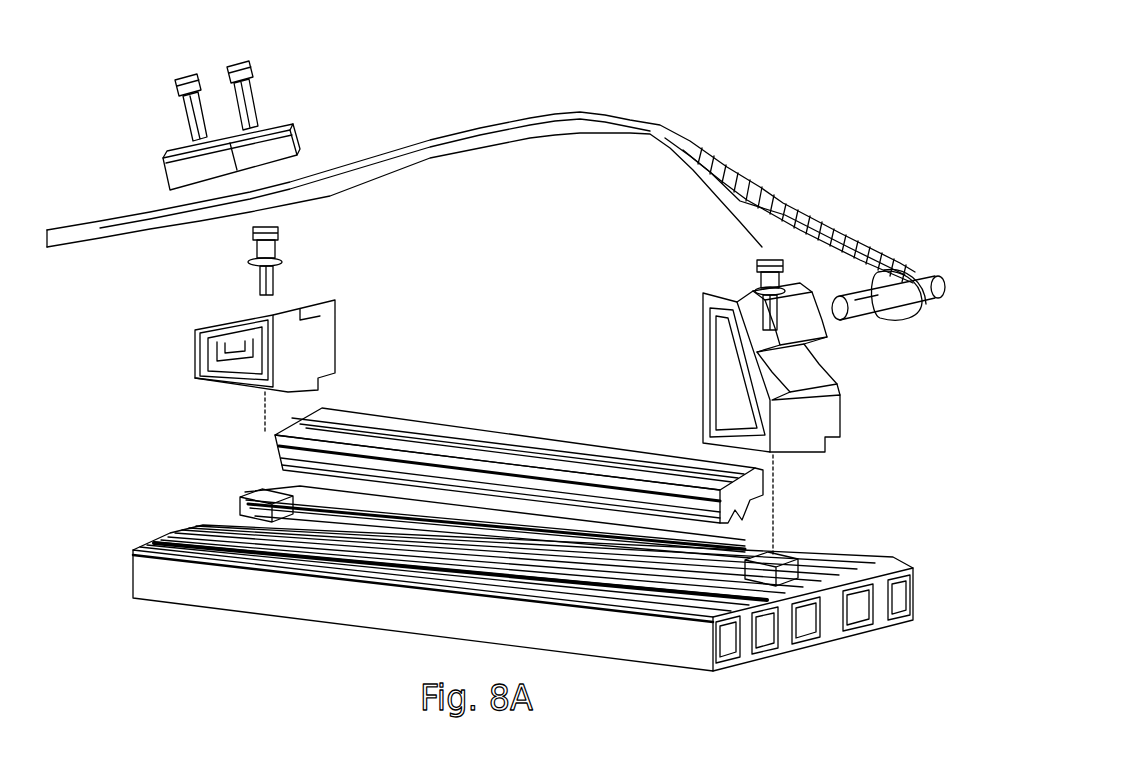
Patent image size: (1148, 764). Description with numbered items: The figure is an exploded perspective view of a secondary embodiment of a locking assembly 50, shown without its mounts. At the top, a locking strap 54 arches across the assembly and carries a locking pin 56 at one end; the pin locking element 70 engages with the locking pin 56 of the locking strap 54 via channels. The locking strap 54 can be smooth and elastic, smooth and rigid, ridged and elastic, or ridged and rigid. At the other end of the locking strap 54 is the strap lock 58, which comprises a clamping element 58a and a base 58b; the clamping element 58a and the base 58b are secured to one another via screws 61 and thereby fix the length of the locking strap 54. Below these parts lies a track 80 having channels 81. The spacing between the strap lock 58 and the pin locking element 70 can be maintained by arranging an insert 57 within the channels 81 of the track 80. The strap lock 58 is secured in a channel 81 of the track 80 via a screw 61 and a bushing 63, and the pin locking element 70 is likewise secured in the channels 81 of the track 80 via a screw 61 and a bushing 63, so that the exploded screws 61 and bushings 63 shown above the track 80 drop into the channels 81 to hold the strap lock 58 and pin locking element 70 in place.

The locking assembly 50 is at (722, 52).
The locking strap 54 is at (598, 108).
The locking pin 56 is at (928, 270).
The insert 57 is at (493, 438).
The strap lock 58 is at (318, 118).
The clamping element 58a is at (275, 128).
The base 58b is at (343, 336).
The screws 61 is at (236, 58).
The bushing 63 is at (236, 500).
The pin locking element 70 is at (846, 408).
The track 80 is at (660, 670).
The channels 81 is at (877, 634).